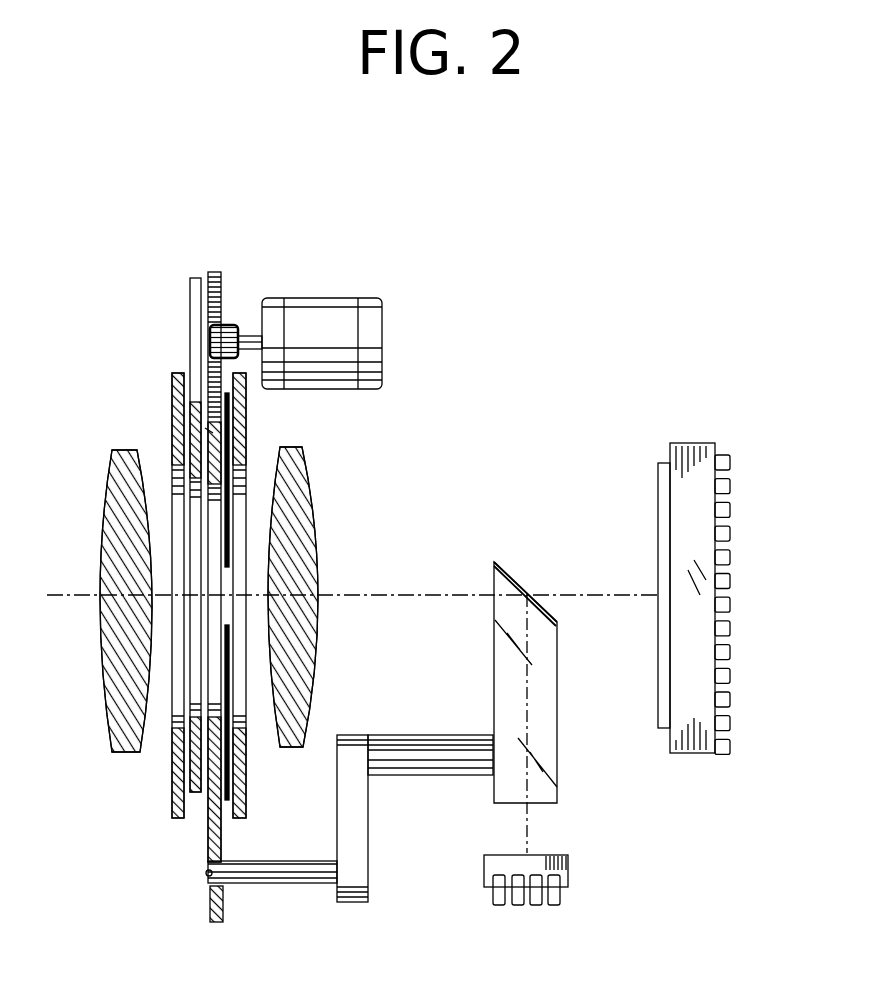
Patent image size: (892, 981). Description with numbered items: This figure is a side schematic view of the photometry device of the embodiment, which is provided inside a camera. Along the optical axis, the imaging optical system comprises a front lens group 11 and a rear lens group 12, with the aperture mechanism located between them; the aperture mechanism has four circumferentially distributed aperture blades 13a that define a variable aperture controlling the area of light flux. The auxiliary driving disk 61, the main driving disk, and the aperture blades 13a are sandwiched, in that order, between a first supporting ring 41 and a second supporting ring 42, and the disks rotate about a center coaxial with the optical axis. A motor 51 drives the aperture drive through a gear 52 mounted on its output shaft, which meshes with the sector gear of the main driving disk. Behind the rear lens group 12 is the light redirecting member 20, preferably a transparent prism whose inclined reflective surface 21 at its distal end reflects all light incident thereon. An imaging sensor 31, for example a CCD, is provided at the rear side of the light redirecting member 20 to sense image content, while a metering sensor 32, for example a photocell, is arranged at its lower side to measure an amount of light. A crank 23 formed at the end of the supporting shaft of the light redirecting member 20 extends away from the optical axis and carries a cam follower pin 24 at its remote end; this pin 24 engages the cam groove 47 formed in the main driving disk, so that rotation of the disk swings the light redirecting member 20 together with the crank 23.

The front lens group 11 is at (108, 540).
The rear lens group 12 is at (310, 532).
The aperture blades 13a is at (226, 385).
The light redirecting member 20 is at (557, 698).
The reflective surface 21 is at (493, 565).
The crank 23 is at (362, 837).
The cam follower pin 24 is at (292, 870).
The imaging sensor 31 is at (663, 482).
The metering sensor 32 is at (568, 865).
The first supporting ring 41 is at (175, 807).
The second supporting ring 42 is at (245, 420).
The cam groove 47 is at (207, 875).
The motor 51 is at (320, 296).
The gear 52 is at (228, 327).
The auxiliary driving disk 61 is at (198, 792).